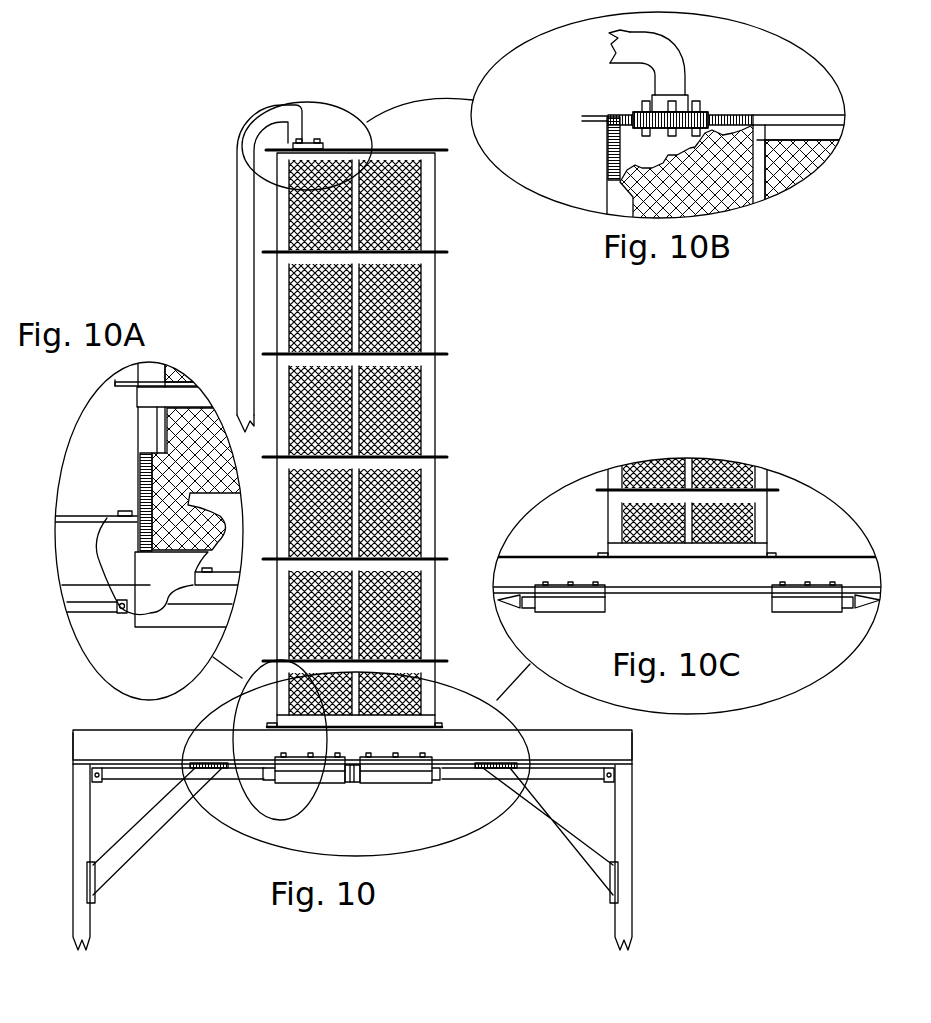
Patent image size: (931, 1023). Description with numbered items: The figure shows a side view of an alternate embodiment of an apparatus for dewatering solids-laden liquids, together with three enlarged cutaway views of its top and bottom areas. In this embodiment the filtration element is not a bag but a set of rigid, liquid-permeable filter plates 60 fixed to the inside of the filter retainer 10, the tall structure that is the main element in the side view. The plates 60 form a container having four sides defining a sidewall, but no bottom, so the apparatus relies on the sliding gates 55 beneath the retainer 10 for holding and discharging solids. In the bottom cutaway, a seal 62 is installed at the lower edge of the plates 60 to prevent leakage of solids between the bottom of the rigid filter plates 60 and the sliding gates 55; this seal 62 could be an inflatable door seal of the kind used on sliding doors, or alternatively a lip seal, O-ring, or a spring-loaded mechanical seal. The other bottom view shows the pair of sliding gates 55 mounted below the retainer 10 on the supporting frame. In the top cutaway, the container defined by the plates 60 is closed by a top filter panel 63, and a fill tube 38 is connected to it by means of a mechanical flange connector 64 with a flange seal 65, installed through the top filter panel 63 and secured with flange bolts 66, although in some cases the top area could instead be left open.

In FIG. 10, the filter retainer 10 is at (412, 133).
In FIG. 10B, the fill tube 38 is at (662, 55).
In FIG. 10A, the sliding gates 55 is at (202, 612).
In FIG. 10C, the sliding gates 55 is at (602, 607).
In FIG. 10A, the filter plates 60 is at (137, 497).
In FIG. 10A, the seal 62 is at (163, 573).
In FIG. 10B, the top filter panel 63 is at (715, 117).
In FIG. 10B, the mechanical flange connector 64 is at (682, 96).
In FIG. 10B, the flange seal 65 is at (633, 113).
In FIG. 10B, the flange bolts 66 is at (637, 137).